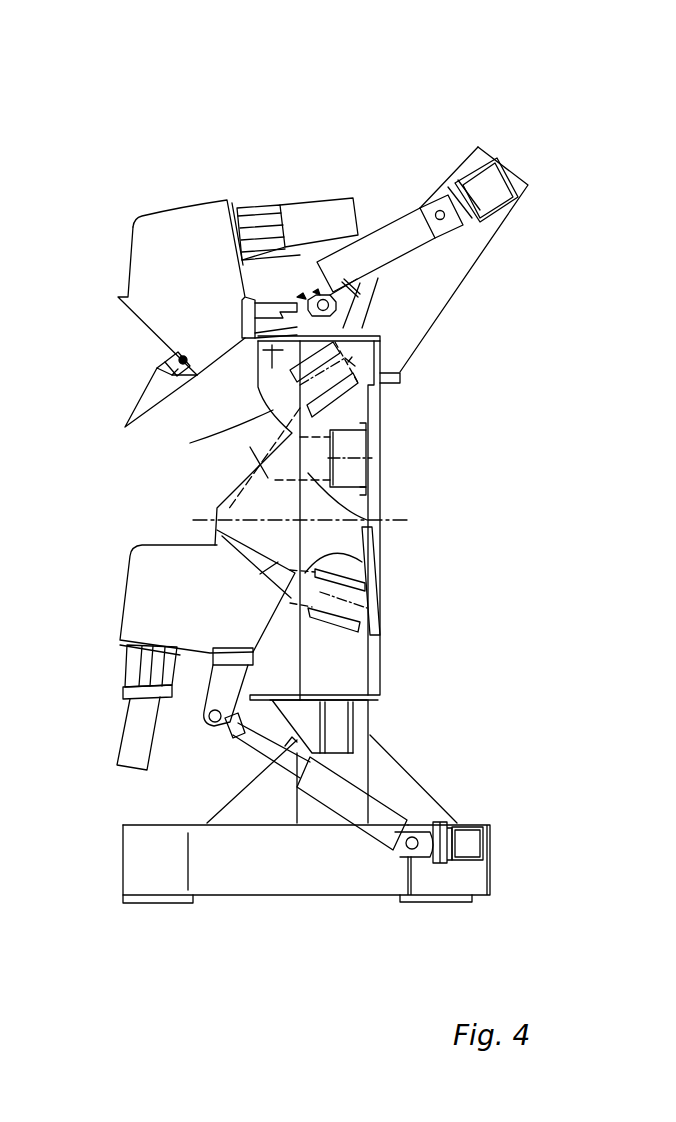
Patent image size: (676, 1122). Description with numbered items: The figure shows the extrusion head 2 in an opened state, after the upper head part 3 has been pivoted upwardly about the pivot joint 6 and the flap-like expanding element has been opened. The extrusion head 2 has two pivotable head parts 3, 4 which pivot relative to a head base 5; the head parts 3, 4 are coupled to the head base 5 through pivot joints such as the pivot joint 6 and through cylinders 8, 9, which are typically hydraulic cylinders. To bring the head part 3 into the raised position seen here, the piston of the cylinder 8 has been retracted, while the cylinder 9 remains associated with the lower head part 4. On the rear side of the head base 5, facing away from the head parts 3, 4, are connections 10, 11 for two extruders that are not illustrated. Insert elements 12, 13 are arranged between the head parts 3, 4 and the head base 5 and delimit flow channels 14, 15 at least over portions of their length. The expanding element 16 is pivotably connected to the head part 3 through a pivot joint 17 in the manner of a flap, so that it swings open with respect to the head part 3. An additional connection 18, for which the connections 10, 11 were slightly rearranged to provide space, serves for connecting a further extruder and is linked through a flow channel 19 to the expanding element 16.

The extrusion head 2 is at (277, 150).
The head part 3 is at (170, 222).
The head part 4 is at (133, 607).
The head base 5 is at (358, 673).
The pivot joint 6 is at (350, 313).
The cylinder 8 is at (393, 228).
The cylinder 9 is at (367, 818).
The connection 10 is at (357, 467).
The connection 11 is at (377, 610).
The insert element 12 is at (228, 498).
The insert element 13 is at (215, 520).
The flow channel 14 is at (380, 520).
The flow channel 15 is at (362, 567).
The expanding element 16 is at (143, 404).
The pivot joint 17 is at (178, 358).
The connection 18 is at (393, 384).
The flow channel 19 is at (282, 405).